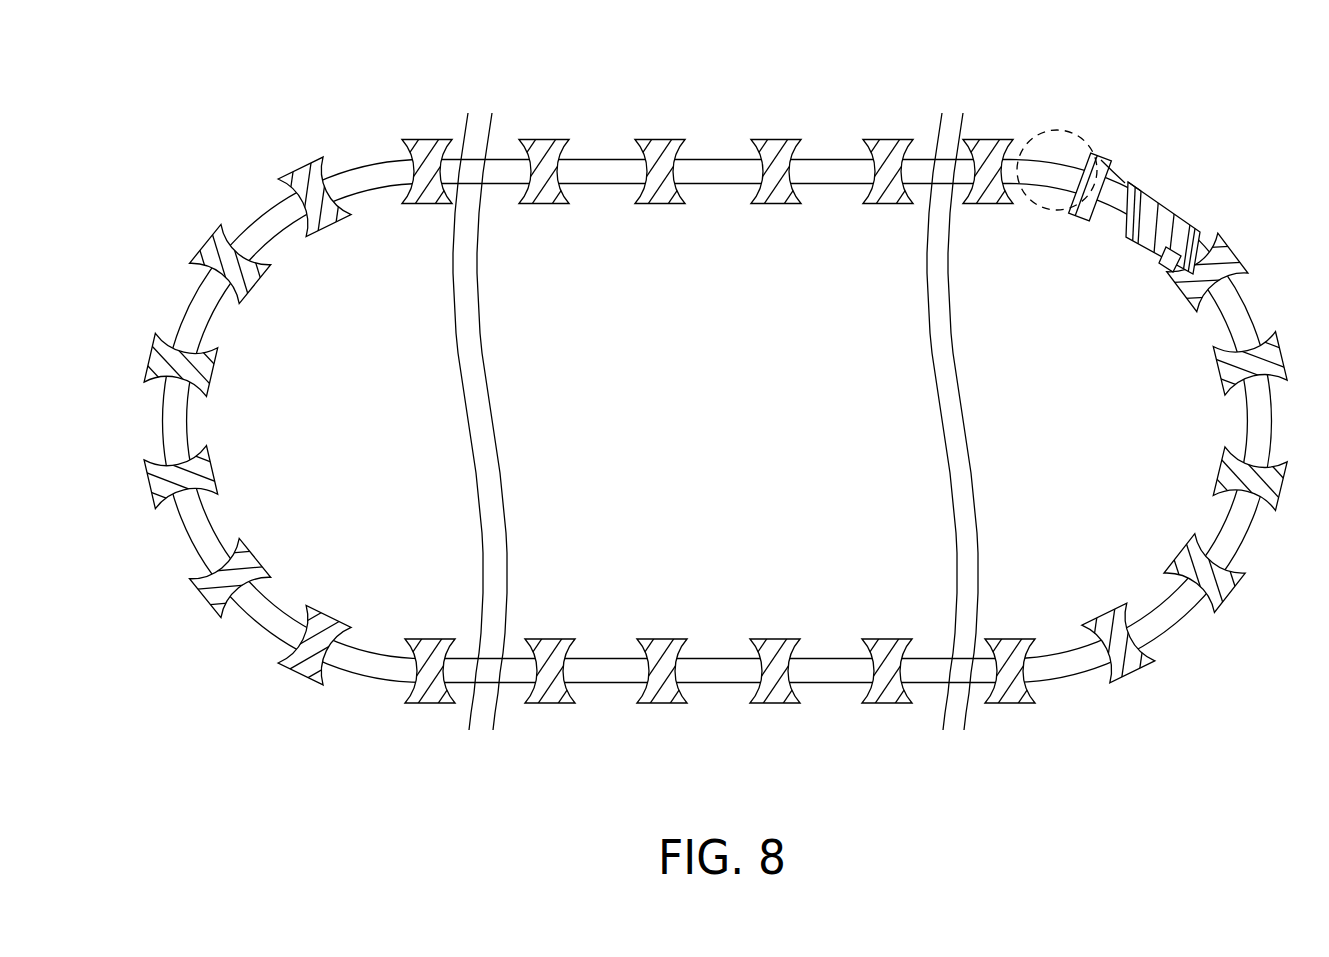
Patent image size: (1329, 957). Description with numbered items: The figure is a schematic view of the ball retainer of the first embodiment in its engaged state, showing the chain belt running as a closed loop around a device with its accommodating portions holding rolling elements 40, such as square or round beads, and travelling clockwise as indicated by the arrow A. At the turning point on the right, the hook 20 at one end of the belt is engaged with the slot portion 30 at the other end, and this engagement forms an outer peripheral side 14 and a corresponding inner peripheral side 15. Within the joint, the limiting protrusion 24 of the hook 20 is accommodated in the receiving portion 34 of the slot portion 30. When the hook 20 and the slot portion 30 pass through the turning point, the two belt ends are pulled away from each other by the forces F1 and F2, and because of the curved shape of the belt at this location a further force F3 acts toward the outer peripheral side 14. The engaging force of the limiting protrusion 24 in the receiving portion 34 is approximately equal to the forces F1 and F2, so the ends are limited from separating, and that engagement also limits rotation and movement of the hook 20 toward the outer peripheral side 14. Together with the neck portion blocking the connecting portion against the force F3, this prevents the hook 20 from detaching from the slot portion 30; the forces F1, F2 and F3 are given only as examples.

The outer peripheral side 14 is at (1197, 200).
The inner peripheral side 15 is at (1108, 237).
The hook 20 is at (1161, 264).
The limiting protrusion 24 is at (1126, 234).
The slot portion 30 is at (1163, 168).
The receiving portion 34 is at (1128, 222).
The rolling element 40 is at (1040, 128).
The arrow A is at (985, 83).
The force F1 is at (1155, 171).
The force F2 is at (1210, 215).
The force F3 is at (1197, 173).